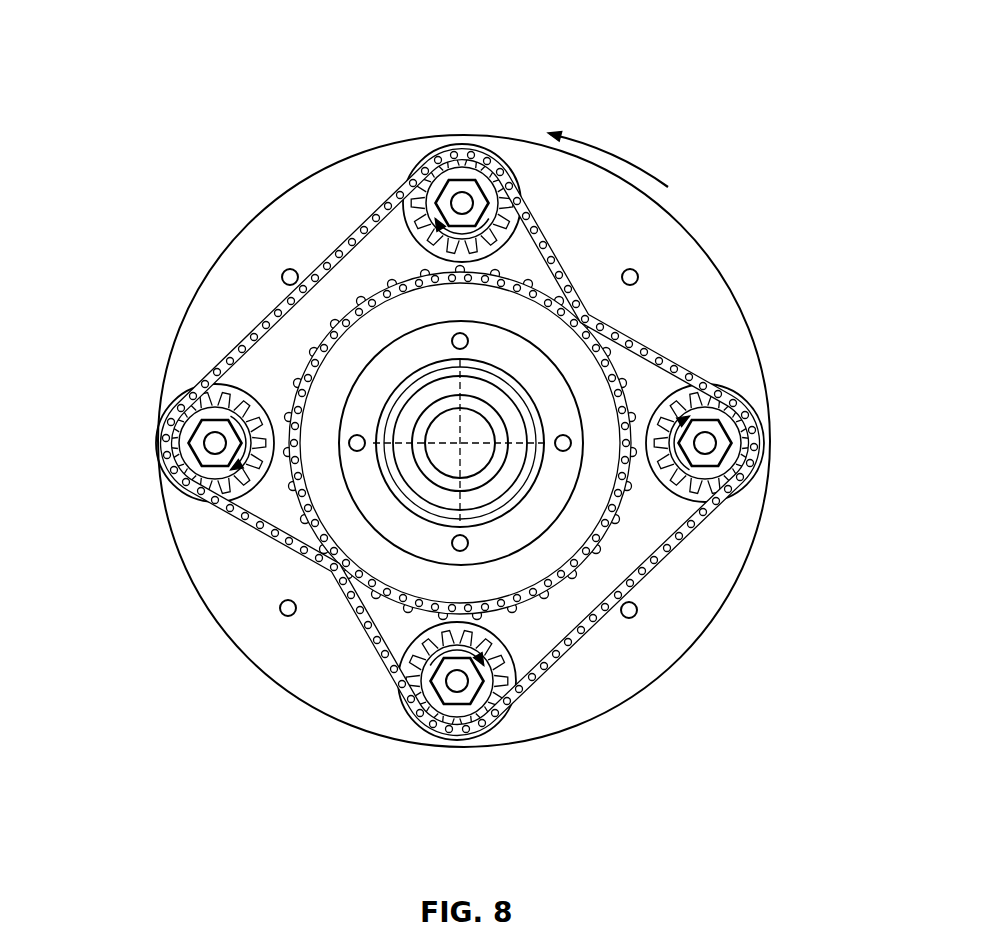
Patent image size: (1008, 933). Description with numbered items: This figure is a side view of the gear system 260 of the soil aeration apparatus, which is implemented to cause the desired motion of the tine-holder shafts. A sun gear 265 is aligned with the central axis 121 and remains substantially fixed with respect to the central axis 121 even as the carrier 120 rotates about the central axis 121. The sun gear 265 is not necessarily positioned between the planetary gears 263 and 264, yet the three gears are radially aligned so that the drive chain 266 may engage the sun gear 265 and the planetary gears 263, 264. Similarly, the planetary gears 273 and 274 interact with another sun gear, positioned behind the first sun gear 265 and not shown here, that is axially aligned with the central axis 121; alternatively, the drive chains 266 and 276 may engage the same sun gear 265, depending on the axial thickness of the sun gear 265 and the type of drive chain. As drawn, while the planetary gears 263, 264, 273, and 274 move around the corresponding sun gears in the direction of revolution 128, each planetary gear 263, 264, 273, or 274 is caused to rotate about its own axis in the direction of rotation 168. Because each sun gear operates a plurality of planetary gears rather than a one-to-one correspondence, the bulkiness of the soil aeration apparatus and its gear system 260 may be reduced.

The gear system 260 is at (284, 57).
The carrier 120 is at (340, 173).
The direction of revolution 128 is at (633, 163).
The central axis 121 is at (593, 507).
The sun gear 265 is at (470, 447).
The direction of rotation 168 is at (388, 218).
The drive chain 266 is at (628, 330).
The planetary gear 273 is at (480, 175).
The planetary gear 264 is at (740, 443).
The planetary gear 263 is at (456, 718).
The planetary gear 274 is at (180, 442).
The drive chain 276 is at (255, 522).